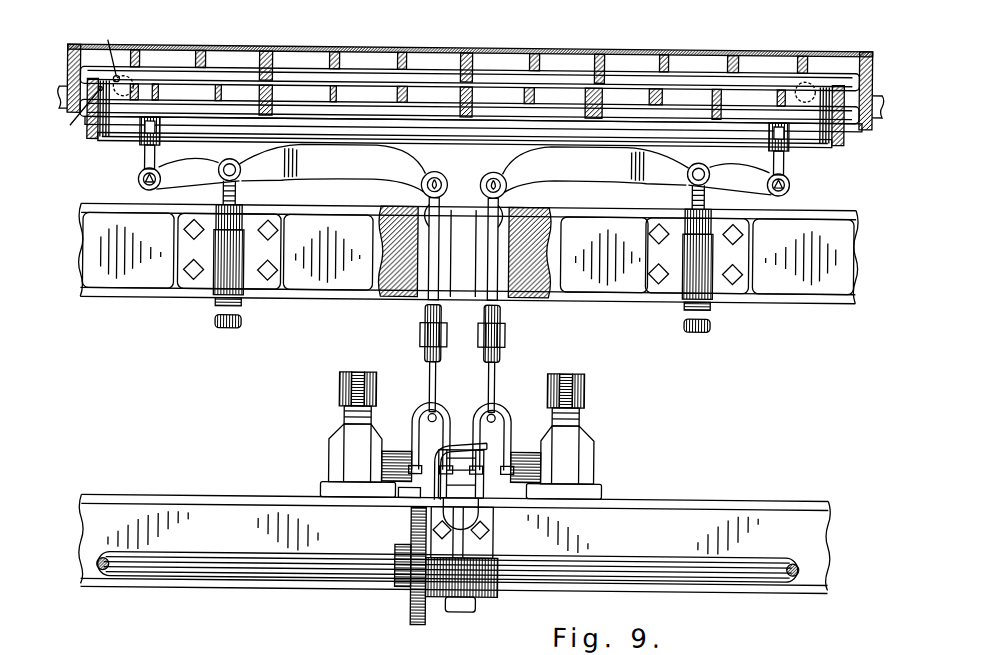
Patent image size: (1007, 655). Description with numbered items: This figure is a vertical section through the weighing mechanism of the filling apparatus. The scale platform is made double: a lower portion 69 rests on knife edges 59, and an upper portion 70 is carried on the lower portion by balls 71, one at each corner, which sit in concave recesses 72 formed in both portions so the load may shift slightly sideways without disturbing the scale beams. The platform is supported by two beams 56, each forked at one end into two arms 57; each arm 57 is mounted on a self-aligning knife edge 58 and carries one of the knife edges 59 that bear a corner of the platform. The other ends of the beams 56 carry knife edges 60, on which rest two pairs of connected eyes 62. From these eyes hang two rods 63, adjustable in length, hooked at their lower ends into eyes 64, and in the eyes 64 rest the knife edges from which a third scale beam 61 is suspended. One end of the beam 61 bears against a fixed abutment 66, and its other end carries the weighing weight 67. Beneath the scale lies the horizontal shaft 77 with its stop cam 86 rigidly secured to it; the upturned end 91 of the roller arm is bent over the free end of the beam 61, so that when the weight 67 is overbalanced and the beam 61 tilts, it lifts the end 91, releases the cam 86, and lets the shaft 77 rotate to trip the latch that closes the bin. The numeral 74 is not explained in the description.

The beam 56 is at (463, 169).
The arm 57 is at (752, 188).
The knife edge 58 is at (689, 180).
The knife edge 59 is at (789, 182).
The knife edge 60 is at (439, 178).
The third scale beam 61 is at (484, 496).
The eye 62 is at (505, 187).
The rod 63 is at (489, 380).
The eye 64 is at (509, 446).
The fixed abutment 66 is at (586, 390).
The weighing weight 67 is at (497, 597).
The lower portion of the platform 69 is at (465, 130).
The upper portion of the platform 70 is at (470, 86).
The ball 71 is at (124, 80).
The concave recess 72 is at (88, 84).
The carriage bar 74 is at (720, 213).
The horizontal shaft 77 is at (323, 573).
The stop cam 86 is at (413, 610).
The end of the arm 91 is at (459, 440).